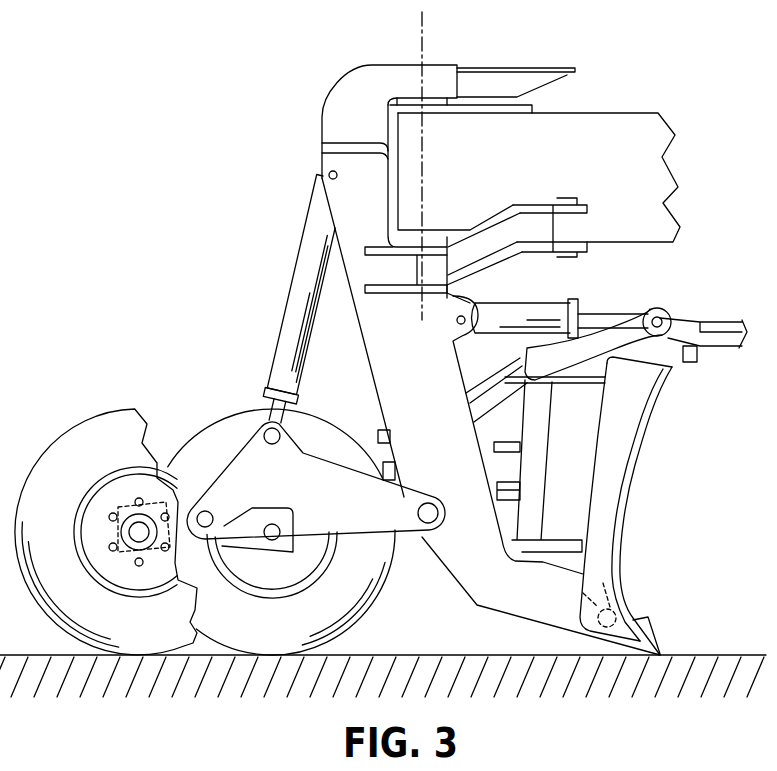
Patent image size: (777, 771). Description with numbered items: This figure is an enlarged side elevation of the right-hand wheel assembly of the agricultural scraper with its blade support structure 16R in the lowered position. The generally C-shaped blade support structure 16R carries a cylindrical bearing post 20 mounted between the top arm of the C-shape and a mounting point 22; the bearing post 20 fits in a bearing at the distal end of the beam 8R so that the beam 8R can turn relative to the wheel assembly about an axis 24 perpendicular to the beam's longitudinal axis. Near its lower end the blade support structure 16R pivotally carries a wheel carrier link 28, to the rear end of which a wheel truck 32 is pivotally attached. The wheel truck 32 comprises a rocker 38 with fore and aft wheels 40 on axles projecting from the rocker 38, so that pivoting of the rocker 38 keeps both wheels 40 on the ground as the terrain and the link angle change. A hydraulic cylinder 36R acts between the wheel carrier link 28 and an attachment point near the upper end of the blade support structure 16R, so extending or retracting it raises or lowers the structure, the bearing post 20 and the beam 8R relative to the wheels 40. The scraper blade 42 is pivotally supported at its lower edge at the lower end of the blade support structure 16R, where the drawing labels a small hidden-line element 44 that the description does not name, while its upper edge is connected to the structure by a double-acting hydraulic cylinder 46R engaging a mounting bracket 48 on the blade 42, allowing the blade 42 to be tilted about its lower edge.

The beam 8R is at (631, 125).
The blade support structure 16R is at (461, 585).
The cylindrical bearing post 20 is at (413, 100).
The mounting point 22 is at (433, 244).
The axis 24 is at (424, 29).
The wheel carrier link 28 is at (336, 472).
The wheel truck 32 is at (70, 407).
The hydraulic cylinder 36R is at (292, 282).
The rocker 38 is at (262, 553).
The wheels 40 is at (63, 637).
The scraper blade 42 is at (629, 511).
The pivot pin 44 is at (604, 592).
The double-acting hydraulic cylinder 46R is at (545, 303).
The mounting bracket 48 is at (680, 319).